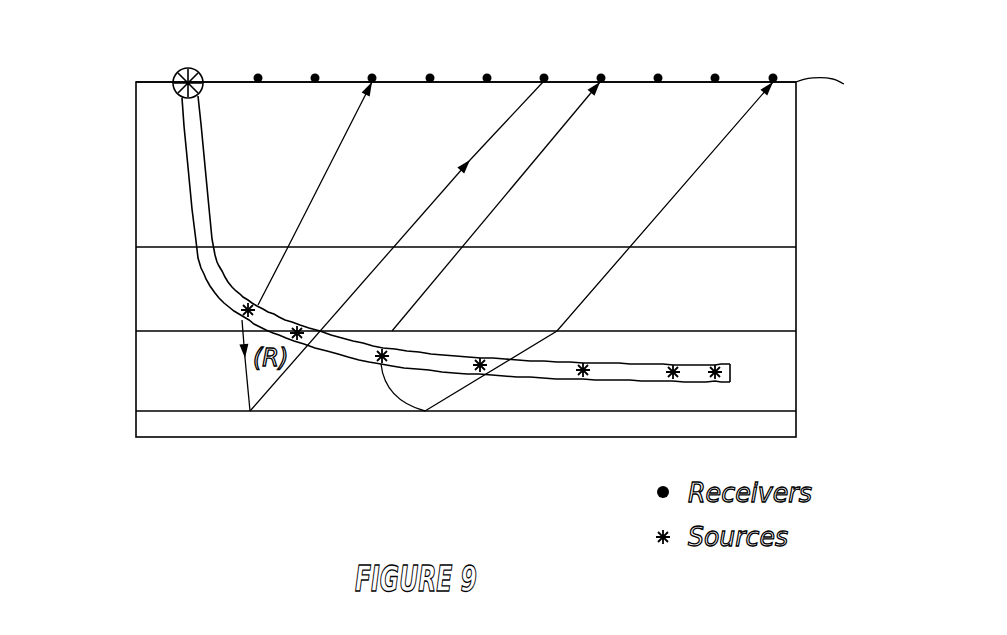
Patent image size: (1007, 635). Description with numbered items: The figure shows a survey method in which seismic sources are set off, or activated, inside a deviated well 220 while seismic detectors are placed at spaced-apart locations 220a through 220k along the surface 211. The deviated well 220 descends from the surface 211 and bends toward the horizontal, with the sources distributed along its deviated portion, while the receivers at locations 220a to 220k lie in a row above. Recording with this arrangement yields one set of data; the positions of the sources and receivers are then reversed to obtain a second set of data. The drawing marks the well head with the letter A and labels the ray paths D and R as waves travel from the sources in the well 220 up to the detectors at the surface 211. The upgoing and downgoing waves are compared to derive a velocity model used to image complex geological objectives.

The deviated well 220 is at (190, 222).
The spaced-apart location 220a is at (260, 75).
The spaced-apart location 220k is at (775, 76).
The surface 211 is at (842, 84).
The wellhead source point A is at (188, 66).
The direct ray D is at (348, 128).
The reflected ray R is at (708, 175).